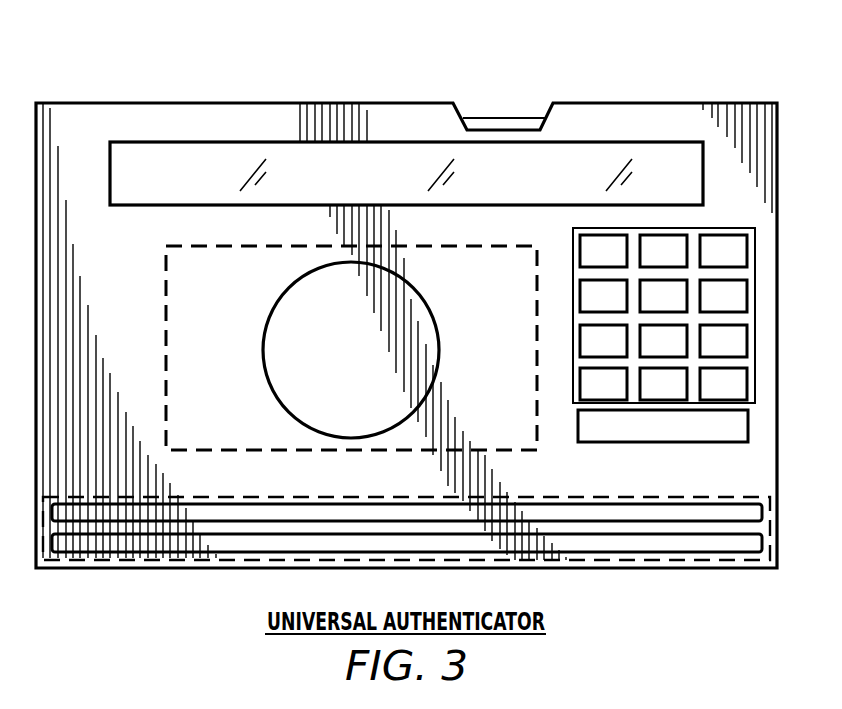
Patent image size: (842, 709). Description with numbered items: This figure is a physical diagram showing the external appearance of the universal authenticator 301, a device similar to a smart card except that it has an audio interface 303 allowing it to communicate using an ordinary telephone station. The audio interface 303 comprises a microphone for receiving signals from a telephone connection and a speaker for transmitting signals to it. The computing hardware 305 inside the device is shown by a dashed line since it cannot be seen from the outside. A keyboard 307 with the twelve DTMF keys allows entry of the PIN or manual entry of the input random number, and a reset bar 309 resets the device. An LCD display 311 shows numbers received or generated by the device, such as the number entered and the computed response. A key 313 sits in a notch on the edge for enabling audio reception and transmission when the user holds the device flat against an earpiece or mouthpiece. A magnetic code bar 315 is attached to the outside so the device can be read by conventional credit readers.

The universal authenticator 301 is at (722, 90).
The audio interface 303 is at (264, 350).
The computing hardware 305 is at (166, 271).
The keyboard 307 is at (713, 229).
The reset bar 309 is at (631, 443).
The LCD display 311 is at (161, 206).
The key 313 is at (502, 117).
The magnetic code bar 315 is at (718, 498).